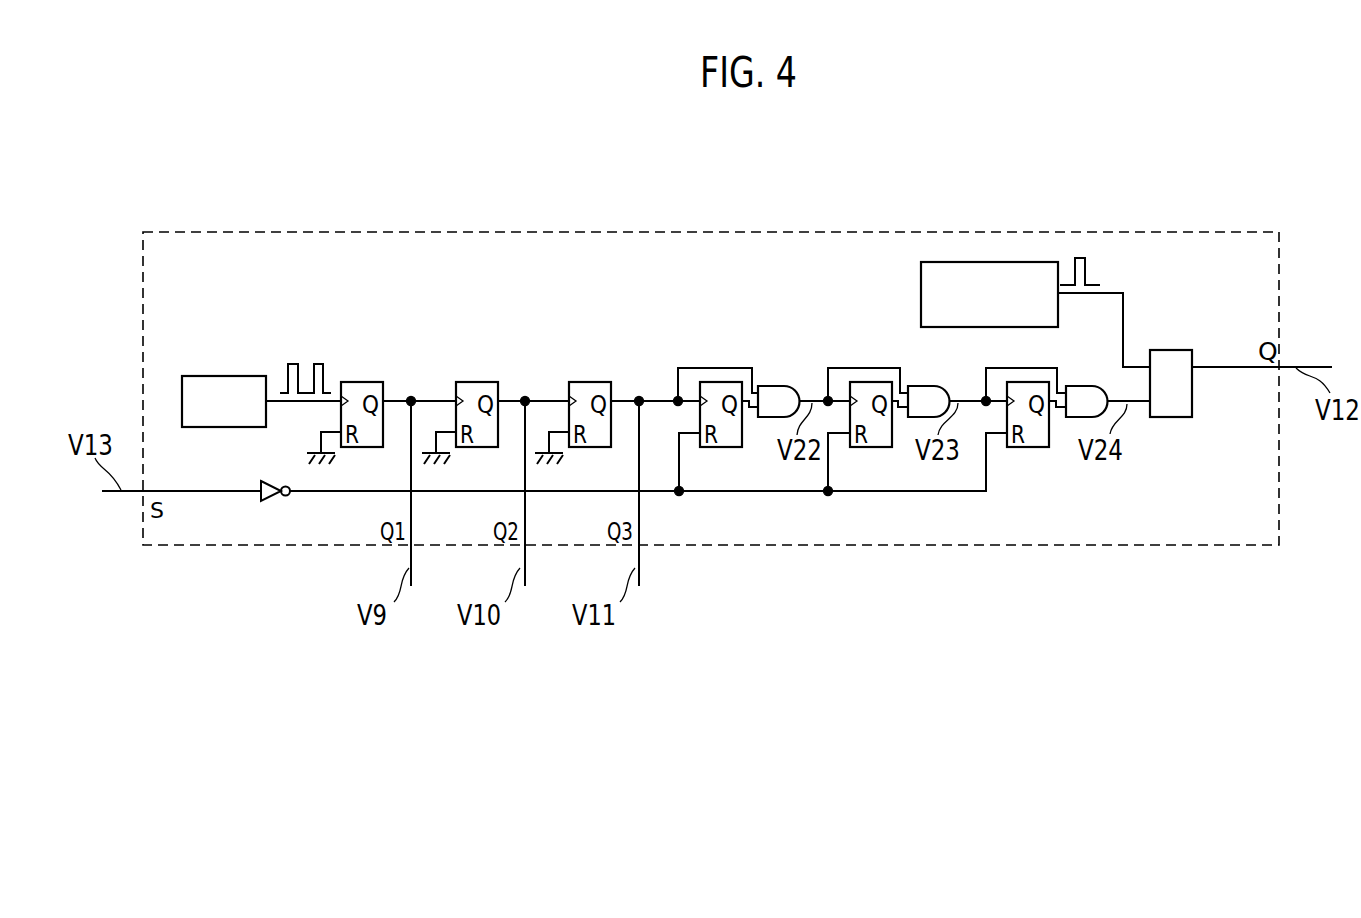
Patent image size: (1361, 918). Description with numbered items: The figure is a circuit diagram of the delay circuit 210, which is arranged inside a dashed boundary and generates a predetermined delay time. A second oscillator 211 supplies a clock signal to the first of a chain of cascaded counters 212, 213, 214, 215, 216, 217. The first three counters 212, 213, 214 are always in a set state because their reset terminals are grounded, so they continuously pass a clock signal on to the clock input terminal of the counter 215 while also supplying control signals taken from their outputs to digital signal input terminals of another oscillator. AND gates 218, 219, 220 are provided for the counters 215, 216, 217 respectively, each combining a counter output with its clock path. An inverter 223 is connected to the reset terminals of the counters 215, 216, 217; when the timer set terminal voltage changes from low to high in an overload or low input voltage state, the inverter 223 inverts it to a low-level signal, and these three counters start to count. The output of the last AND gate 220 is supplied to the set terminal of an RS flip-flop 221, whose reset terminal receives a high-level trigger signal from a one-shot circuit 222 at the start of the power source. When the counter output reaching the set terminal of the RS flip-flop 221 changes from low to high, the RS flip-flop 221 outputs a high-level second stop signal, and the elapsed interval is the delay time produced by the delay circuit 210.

The delay circuit 210 is at (788, 232).
The second oscillator 211 is at (230, 376).
The counter 212 is at (359, 383).
The counter 213 is at (474, 383).
The counter 214 is at (587, 383).
The counter 215 is at (716, 381).
The counter 216 is at (878, 381).
The counter 217 is at (1022, 448).
The AND gate 218 is at (771, 386).
The AND gate 219 is at (929, 386).
The AND gate 220 is at (1090, 386).
The RS flip-flop 221 is at (1166, 418).
The one-shot circuit 222 is at (921, 289).
The inverter 223 is at (272, 496).